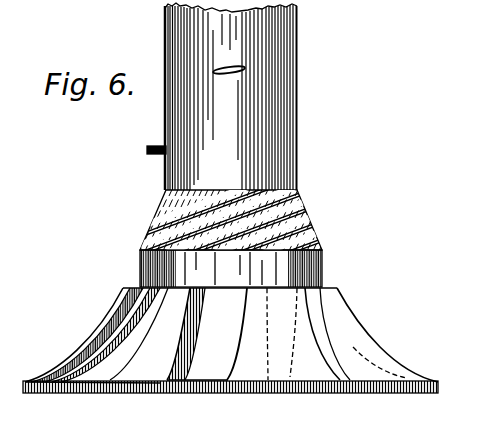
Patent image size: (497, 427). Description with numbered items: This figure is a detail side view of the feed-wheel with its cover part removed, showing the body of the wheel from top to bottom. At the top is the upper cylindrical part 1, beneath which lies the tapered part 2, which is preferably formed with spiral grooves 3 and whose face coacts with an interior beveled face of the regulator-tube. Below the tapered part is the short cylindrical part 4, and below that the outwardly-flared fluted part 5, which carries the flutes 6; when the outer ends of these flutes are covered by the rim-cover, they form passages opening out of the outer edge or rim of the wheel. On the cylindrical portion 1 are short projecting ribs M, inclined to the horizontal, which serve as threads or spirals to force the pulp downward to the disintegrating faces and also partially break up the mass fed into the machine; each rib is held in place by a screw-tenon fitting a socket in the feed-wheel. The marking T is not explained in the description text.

The upper cylindrical part 1 is at (231, 96).
The tapered part 2 is at (231, 220).
The spiral grooves 3 is at (310, 233).
The short cylindrical part 4 is at (238, 268).
The outwardly-flared fluted part 5 is at (230, 340).
The flutes 6 is at (175, 336).
The pin head T is at (266, 120).
The short projecting ribs M is at (246, 73).